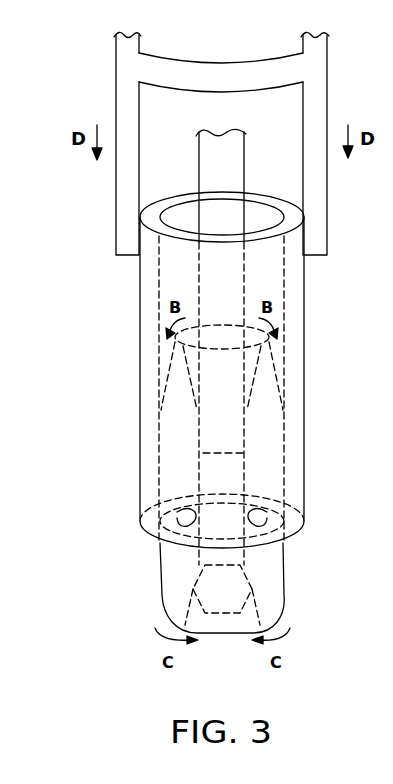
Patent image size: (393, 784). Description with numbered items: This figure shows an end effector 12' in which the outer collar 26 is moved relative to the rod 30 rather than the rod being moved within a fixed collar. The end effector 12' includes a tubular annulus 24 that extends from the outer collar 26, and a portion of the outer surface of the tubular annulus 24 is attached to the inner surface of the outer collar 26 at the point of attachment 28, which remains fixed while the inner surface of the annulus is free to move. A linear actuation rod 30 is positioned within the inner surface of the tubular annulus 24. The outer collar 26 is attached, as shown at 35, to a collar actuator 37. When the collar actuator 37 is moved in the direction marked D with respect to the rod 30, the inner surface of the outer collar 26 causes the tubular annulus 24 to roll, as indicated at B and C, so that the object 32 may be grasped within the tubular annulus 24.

The end effector 12' is at (69, 250).
The tubular annulus 24 is at (276, 600).
The outer collar 26 is at (302, 286).
The point of attachment 28 is at (185, 522).
The actuation rod 30 is at (243, 163).
The object 32 is at (228, 613).
The attachment of outer collar to collar actuator 35 is at (137, 238).
The collar actuator 37 is at (315, 75).